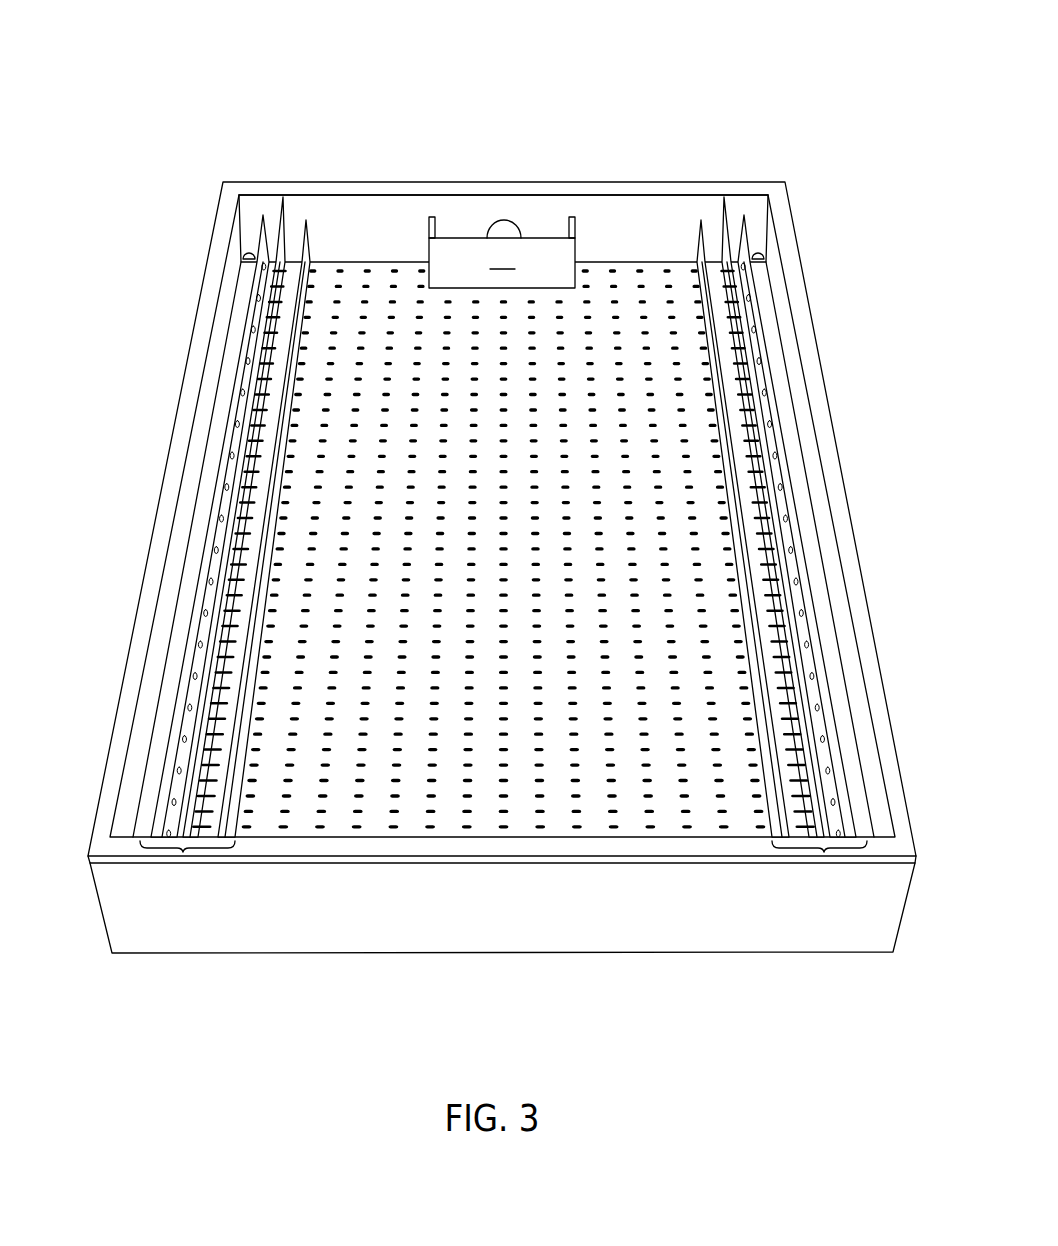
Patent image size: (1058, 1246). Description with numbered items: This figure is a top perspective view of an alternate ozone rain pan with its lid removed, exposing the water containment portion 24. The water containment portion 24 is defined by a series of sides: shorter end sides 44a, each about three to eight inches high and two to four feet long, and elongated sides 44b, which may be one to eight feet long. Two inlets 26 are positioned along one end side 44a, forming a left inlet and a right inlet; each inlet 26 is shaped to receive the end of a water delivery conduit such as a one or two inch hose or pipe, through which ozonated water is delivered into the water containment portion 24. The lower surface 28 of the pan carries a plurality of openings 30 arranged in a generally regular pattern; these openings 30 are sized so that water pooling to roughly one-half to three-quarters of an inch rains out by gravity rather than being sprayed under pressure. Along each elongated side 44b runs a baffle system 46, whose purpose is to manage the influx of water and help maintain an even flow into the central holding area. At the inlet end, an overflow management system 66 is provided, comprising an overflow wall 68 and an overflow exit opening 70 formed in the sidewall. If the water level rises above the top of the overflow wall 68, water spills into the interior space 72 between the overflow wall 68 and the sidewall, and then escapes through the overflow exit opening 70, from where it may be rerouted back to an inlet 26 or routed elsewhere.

The water containment portion 24 is at (686, 166).
The inlet 26 is at (243, 253).
The lower surface 28 is at (638, 420).
The openings 30 is at (597, 517).
The end sides 44a is at (372, 208).
The elongated sides 44b is at (178, 455).
The baffle system 46 is at (182, 850).
The overflow management system 66 is at (495, 154).
The overflow wall 68 is at (502, 263).
The overflow exit opening 70 is at (516, 180).
The interior space 72 is at (459, 228).